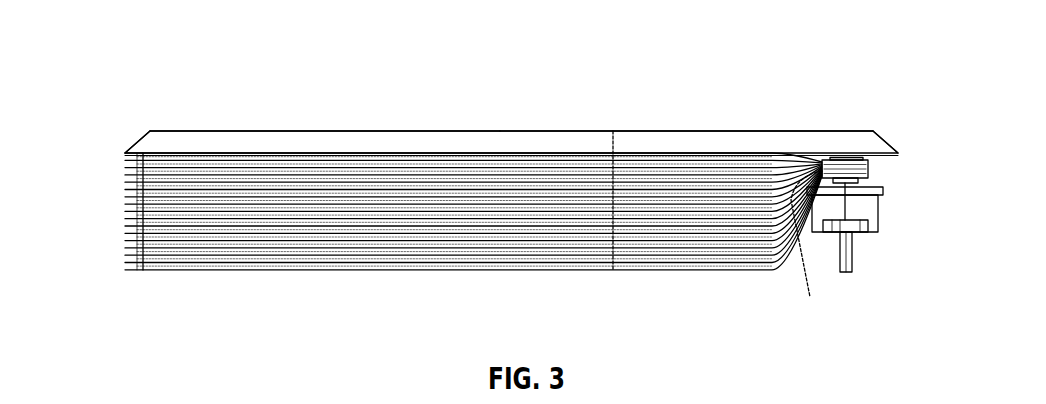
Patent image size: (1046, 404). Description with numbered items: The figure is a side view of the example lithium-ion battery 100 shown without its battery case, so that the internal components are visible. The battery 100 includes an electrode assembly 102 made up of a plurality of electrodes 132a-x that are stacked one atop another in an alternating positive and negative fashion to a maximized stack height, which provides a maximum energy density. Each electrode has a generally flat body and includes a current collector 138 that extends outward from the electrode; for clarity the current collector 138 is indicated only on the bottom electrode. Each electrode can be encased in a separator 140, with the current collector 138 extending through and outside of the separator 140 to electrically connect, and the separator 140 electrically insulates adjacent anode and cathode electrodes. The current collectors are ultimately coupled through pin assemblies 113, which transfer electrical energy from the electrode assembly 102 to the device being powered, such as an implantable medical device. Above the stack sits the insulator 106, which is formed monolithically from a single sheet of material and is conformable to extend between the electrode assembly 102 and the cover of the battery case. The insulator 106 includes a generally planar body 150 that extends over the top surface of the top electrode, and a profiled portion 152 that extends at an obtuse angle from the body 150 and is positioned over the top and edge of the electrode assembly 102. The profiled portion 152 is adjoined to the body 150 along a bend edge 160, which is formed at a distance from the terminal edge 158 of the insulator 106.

The battery 100 is at (234, 35).
The electrode assembly 102 is at (432, 243).
The insulator 106 is at (373, 130).
The pin assembly 113 is at (850, 257).
The plurality of electrodes 132a-x is at (120, 153).
The current collector 138 is at (812, 250).
The separator 140 is at (127, 271).
The body 150 is at (497, 130).
The profiled portion 152 is at (127, 150).
The terminal edge 158 is at (888, 157).
The bend edge 160 is at (148, 130).